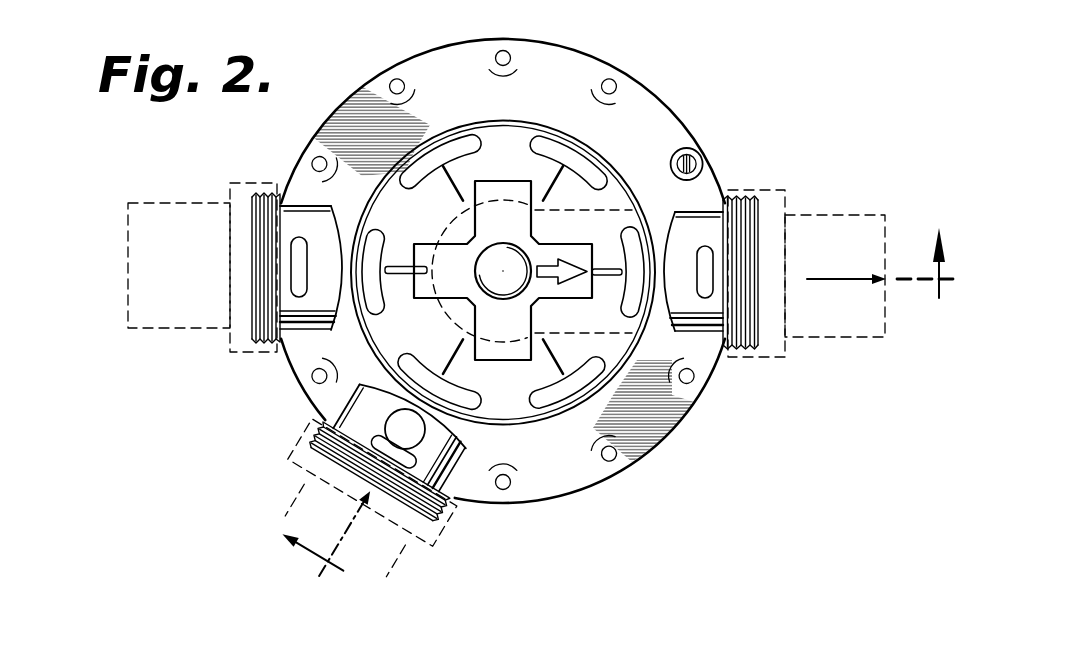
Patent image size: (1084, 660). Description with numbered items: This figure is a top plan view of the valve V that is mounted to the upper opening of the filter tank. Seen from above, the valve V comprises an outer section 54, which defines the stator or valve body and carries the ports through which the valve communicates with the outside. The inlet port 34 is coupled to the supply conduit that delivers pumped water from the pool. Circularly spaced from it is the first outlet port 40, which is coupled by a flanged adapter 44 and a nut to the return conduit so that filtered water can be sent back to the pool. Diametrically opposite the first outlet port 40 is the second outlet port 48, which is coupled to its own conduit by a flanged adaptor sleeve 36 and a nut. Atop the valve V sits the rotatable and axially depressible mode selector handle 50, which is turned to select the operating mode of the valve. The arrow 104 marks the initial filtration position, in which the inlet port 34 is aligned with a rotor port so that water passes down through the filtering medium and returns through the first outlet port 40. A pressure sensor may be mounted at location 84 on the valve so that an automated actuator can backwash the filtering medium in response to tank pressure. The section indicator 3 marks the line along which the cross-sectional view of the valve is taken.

The valve V is at (703, 114).
The outer section 54 is at (576, 70).
The mode selector handle 50 is at (506, 186).
The arrow 104 is at (549, 278).
The flanged adaptor sleeve 36 is at (181, 203).
The second outlet port 48 is at (237, 340).
The first outlet port 40 is at (758, 213).
The flanged adapter 44 is at (860, 345).
The pressure sensor mounting location 84 is at (399, 424).
The inlet port 34 is at (413, 521).
The section line 3- 3 is at (605, 387).